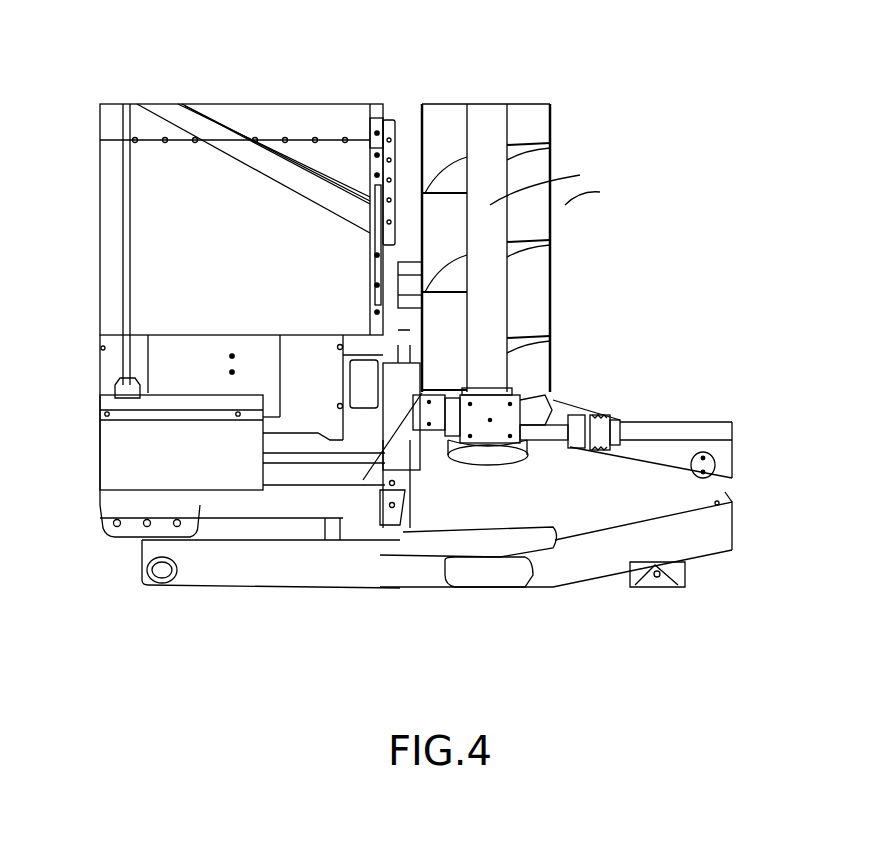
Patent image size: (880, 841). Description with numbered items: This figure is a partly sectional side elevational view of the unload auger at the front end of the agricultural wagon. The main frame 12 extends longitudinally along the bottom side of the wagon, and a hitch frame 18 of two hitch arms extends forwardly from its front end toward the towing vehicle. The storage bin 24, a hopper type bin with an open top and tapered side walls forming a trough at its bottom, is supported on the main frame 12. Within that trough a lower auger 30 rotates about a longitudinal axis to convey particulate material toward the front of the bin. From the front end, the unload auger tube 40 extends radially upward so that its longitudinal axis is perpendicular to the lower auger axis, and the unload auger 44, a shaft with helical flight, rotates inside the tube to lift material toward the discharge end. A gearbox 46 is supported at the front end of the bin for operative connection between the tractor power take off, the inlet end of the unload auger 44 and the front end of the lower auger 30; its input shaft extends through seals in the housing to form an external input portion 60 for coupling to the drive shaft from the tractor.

The main frame 12 is at (130, 507).
The hitch frame 18 is at (590, 557).
The storage bin 24 is at (247, 230).
The lower auger 30 is at (398, 410).
The unload auger tube 40 is at (553, 215).
The unload auger 44 is at (545, 180).
The gearbox 46 is at (485, 430).
The input portion 60 is at (557, 430).